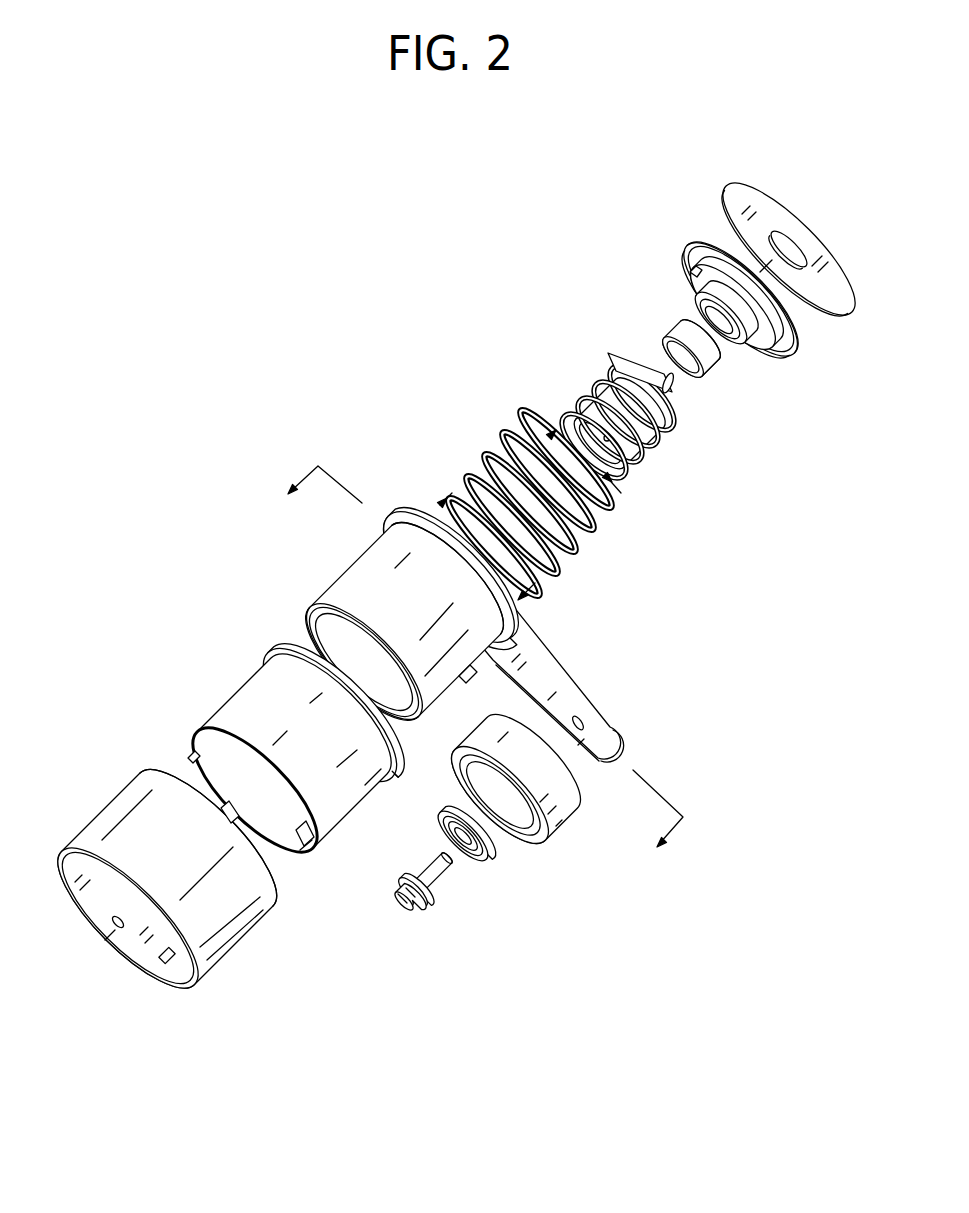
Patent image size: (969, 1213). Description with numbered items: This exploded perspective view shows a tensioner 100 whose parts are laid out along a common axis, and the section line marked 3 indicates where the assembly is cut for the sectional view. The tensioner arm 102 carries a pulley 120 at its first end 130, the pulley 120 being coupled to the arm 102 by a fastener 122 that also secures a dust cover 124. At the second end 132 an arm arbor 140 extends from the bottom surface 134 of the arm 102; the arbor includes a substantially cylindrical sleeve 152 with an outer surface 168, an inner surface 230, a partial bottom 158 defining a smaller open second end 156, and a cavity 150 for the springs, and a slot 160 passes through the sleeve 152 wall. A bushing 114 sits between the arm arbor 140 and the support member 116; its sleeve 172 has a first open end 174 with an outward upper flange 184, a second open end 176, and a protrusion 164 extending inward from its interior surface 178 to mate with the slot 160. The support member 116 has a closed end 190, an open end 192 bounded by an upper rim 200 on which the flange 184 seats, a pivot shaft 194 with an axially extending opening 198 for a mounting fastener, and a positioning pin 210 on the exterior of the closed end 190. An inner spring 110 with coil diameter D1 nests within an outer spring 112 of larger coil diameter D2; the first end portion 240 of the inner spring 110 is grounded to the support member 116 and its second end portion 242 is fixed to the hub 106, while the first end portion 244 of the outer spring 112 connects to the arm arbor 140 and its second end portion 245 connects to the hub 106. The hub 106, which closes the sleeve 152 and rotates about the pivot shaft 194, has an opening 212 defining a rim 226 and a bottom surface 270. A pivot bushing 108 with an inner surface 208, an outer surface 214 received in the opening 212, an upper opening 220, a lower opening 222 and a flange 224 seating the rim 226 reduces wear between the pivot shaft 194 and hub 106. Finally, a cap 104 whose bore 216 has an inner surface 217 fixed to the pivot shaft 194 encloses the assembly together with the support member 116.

The tensioner 100 is at (456, 596).
The tensioner arm 102 is at (429, 616).
The cap 104 is at (788, 240).
The hub 106 is at (727, 305).
The pivot bushing 108 is at (716, 360).
The inner spring 110 is at (631, 431).
The outer spring 112 is at (557, 485).
The bushing 114 is at (294, 770).
The support member 116 is at (241, 940).
The pulley 120 is at (570, 830).
The fastener 122 is at (433, 885).
The dust cover 124 is at (489, 862).
The first end of the arm 130 is at (599, 683).
The second end of the arm 132 is at (414, 517).
The bottom surface of the arm 134 is at (388, 517).
The arm arbor 140 is at (378, 592).
The cavity 150 is at (386, 720).
The sleeve 152 is at (354, 613).
The open second end 156 is at (310, 626).
The partial bottom 158 is at (326, 620).
The slot 160 is at (465, 679).
The protrusion 164 is at (312, 832).
The outer surface of the arm arbor 168 is at (392, 560).
The sleeve of the bushing 172 is at (325, 749).
The first open end 174 is at (399, 769).
The second open end 176 is at (292, 862).
The interior surface of the sleeve 178 is at (191, 762).
The upper flange 184 is at (263, 656).
The closed end 190 is at (164, 984).
The open end 192 is at (271, 868).
The pivot shaft 194 is at (225, 818).
The axially extending opening 198 is at (118, 929).
The upper rim 200 is at (178, 890).
The inner surface of the pivot bushing 208 is at (704, 394).
The positioning pin 210 is at (182, 962).
The opening 212 is at (698, 316).
The outer surface of the pivot bushing 214 is at (705, 322).
The bore 216 is at (797, 328).
The inner surface of the bore 217 is at (789, 243).
The upper opening 220 is at (785, 350).
The lower opening 222 is at (680, 388).
The flange 224 is at (698, 374).
The rim 226 is at (704, 300).
The inner surface of the arm arbor 230 is at (338, 602).
The first end portion of the inner spring 240 is at (634, 466).
The second end portion of the inner spring 242 is at (628, 372).
The first end portion of the outer spring 244 is at (544, 595).
The second end portion of the outer spring 245 is at (536, 456).
The bottom surface of the hub 270 is at (694, 276).
The section line 3 is at (495, 646).
The inner spring coil diameter D1 is at (548, 438).
The outer spring coil diameter D2 is at (443, 500).